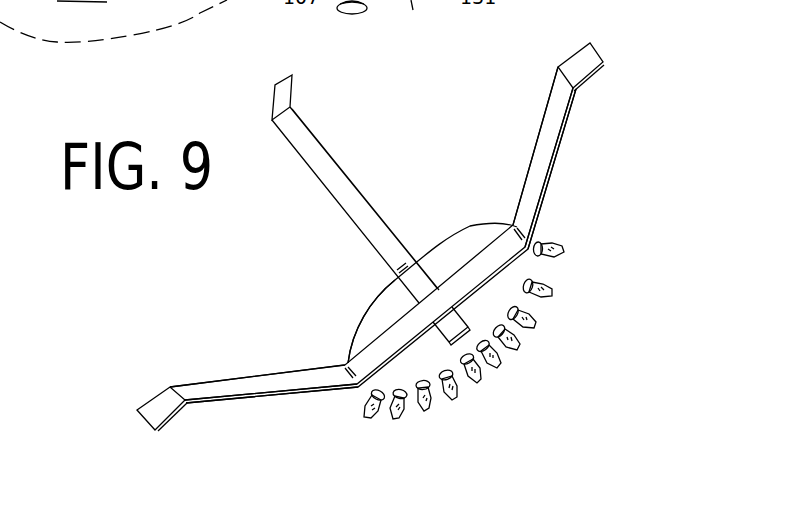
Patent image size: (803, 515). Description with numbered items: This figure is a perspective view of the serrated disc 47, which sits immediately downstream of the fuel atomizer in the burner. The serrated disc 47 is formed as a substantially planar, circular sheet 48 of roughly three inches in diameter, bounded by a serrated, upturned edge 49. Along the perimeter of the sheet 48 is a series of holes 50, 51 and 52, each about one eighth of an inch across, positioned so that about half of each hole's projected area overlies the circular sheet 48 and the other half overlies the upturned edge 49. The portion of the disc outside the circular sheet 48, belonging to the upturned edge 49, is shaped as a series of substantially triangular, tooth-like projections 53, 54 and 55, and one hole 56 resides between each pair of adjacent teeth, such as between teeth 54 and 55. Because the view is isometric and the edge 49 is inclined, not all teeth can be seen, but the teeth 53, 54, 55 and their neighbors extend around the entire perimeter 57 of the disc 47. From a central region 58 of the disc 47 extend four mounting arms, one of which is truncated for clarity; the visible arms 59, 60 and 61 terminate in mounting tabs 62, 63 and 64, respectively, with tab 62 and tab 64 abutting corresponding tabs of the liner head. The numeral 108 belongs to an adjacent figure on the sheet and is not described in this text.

The serrated disc 47 is at (590, 218).
The circular sheet 48 is at (463, 250).
The serrated upturned edge 49 is at (430, 386).
The hole 50 is at (520, 313).
The hole 51 is at (535, 284).
The hole 52 is at (547, 260).
The tooth-like projection 53 is at (483, 368).
The tooth-like projection 54 is at (503, 352).
The tooth-like projection 55 is at (532, 334).
The hole 56 is at (500, 331).
The perimeter 57 is at (353, 322).
The central region 58 is at (439, 305).
The mounting arm 59 is at (205, 390).
The mounting arm 60 is at (323, 170).
The mounting arm 61 is at (548, 135).
The mounting tab 62 is at (163, 408).
The mounting tab 63 is at (283, 90).
The mounting tab 64 is at (585, 60).
The component of adjacent figure 108 is at (426, 18).